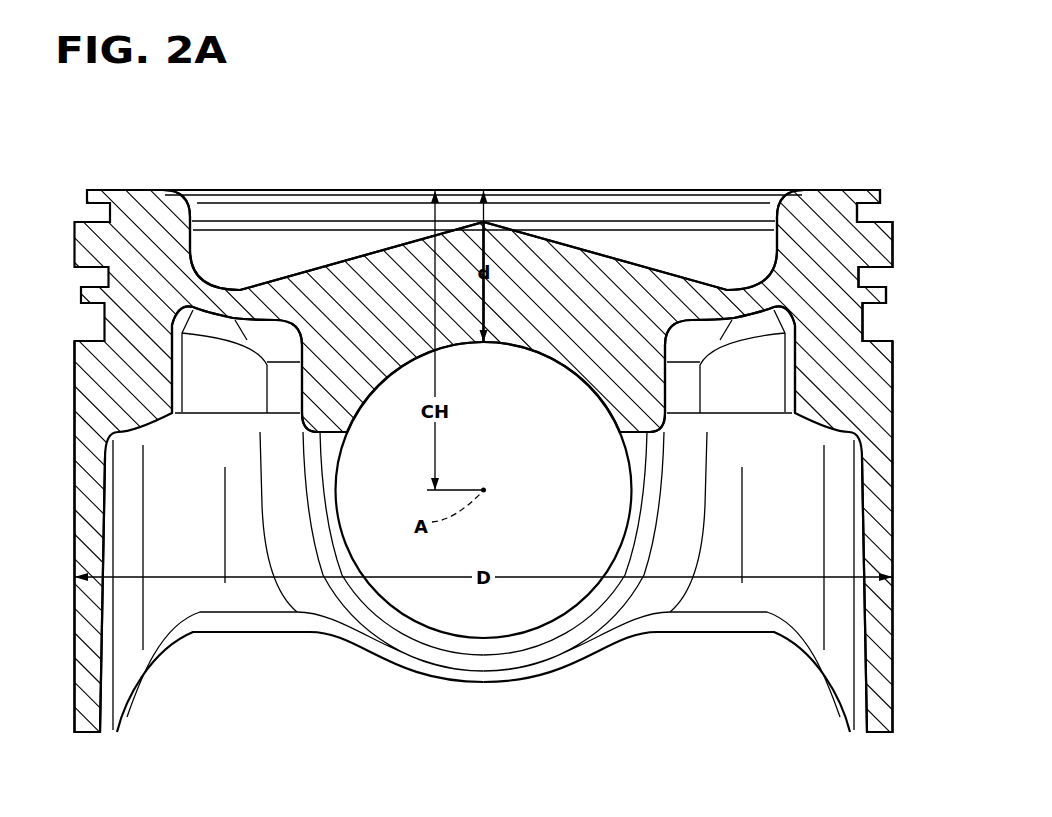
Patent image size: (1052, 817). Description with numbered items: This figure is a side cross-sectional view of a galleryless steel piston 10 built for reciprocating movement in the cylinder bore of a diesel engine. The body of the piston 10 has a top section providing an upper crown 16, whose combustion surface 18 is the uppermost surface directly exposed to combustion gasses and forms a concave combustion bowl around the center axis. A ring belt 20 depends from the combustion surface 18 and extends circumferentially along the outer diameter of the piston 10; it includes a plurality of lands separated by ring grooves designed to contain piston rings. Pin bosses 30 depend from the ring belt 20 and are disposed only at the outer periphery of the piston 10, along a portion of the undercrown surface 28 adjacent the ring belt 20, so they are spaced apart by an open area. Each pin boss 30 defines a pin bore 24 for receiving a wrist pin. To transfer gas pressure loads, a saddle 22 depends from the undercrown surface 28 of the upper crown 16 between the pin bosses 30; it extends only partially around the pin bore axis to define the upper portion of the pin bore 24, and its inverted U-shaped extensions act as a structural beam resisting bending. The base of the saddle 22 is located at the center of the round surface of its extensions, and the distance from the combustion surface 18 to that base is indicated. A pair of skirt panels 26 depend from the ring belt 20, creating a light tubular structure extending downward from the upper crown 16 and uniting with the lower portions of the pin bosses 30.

The galleryless steel piston 10 is at (866, 122).
The upper crown 16 is at (138, 177).
The combustion surface 18 is at (643, 188).
The ring belt 20 is at (892, 245).
The saddle 22 is at (387, 303).
The pin bore 24 is at (560, 458).
The skirt panels 26 is at (74, 533).
The undercrown surface 28 is at (232, 320).
The pin bosses 30 is at (317, 603).